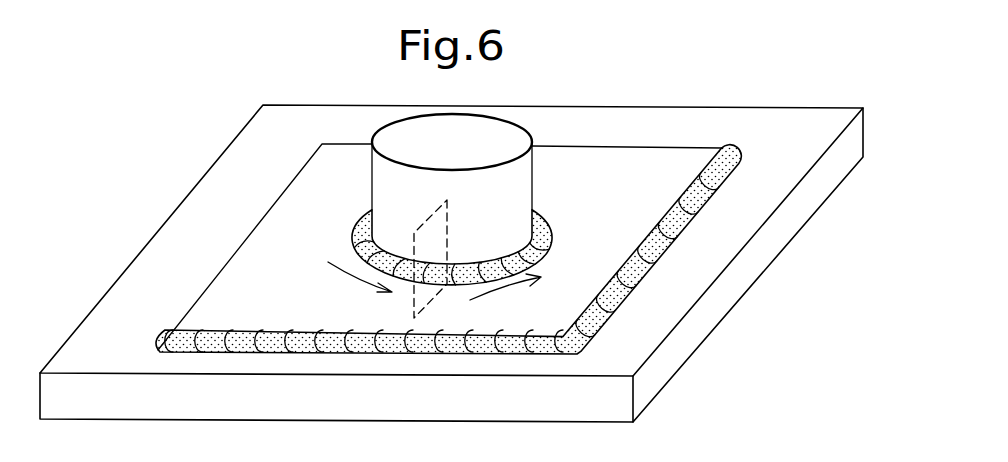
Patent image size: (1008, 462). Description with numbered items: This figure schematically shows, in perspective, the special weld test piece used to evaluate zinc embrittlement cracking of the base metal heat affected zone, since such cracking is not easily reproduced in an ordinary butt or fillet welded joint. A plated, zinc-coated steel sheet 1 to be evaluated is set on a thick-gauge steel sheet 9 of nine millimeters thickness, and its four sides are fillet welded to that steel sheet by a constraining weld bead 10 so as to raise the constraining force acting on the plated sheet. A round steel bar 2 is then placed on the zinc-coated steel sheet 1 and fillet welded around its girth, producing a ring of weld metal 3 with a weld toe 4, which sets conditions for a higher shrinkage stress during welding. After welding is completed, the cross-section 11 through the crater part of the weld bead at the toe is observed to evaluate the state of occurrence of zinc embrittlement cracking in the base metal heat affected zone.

The zinc-coated steel sheet 1 is at (440, 247).
The round steel bar 2 is at (452, 162).
The weld metal 3 is at (549, 236).
The weld toe 4 is at (440, 288).
The steel sheet for constraining zinc-coated steel sheet 9 is at (451, 263).
The weld bead for constraining zinc-coated steel sheet 10 is at (628, 297).
The observed cross-section of zinc embrittlement cracking occurring at base metal he 11 is at (422, 257).